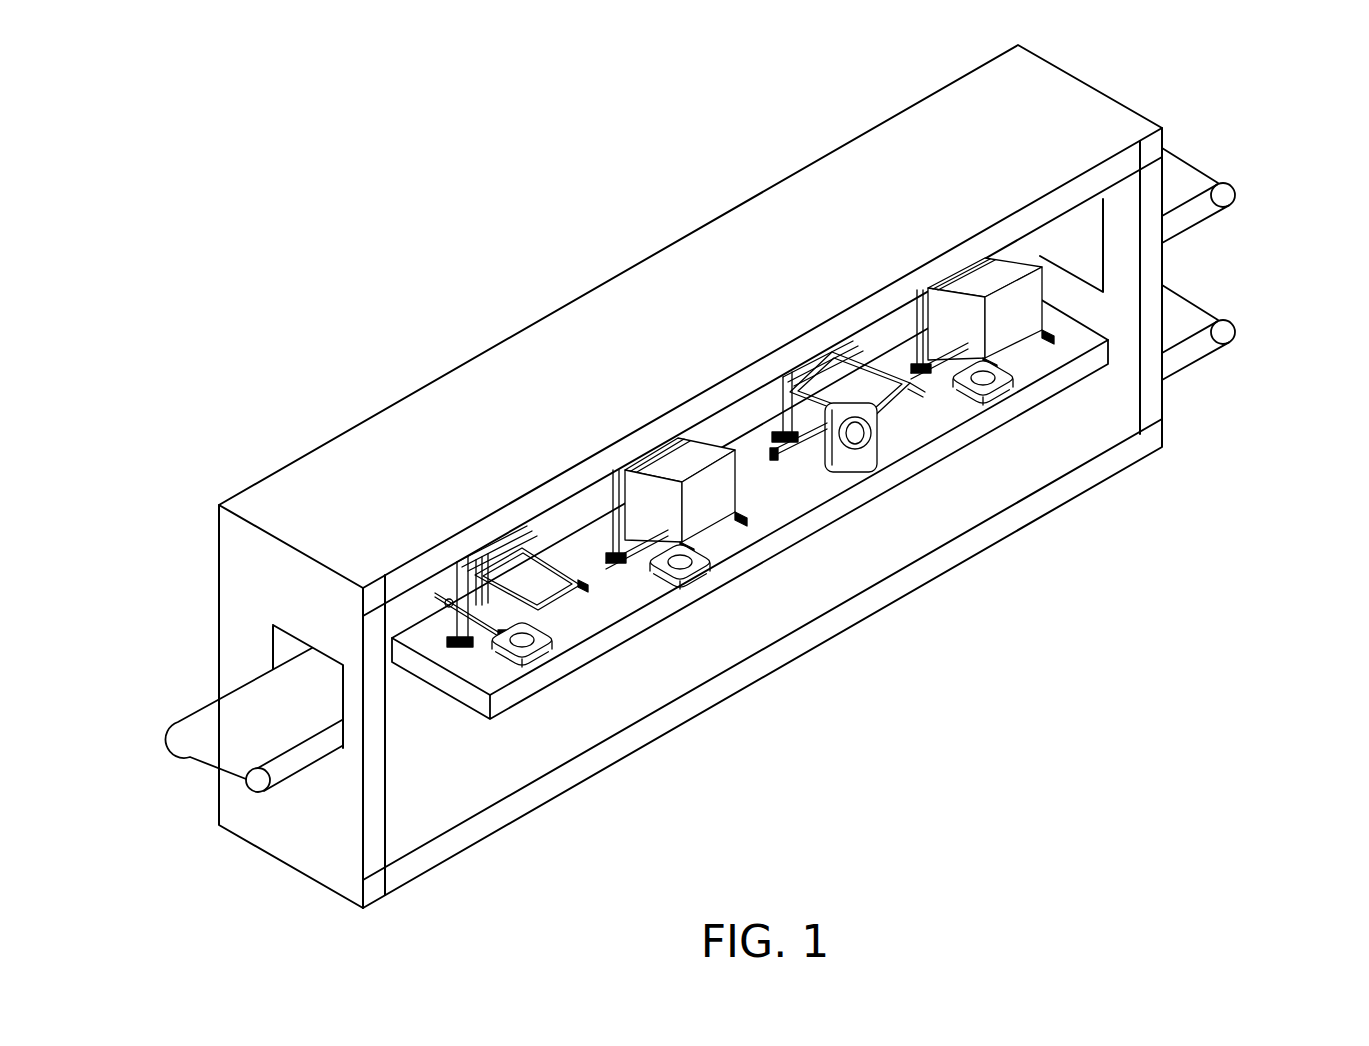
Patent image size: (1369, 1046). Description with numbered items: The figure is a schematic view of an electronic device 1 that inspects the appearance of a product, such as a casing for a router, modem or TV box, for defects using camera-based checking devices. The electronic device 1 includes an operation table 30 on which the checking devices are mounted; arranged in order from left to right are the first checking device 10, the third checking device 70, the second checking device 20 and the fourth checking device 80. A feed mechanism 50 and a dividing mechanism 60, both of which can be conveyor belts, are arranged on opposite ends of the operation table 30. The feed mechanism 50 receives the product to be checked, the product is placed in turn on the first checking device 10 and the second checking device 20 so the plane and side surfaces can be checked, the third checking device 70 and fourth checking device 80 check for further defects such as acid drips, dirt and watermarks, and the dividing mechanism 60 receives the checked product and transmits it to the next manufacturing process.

The electronic device 1 is at (428, 233).
The first checking device 10 is at (562, 645).
The second checking device 20 is at (882, 447).
The operation table 30 is at (493, 677).
The feed mechanism 50 is at (235, 712).
The dividing mechanism 60 is at (1210, 276).
The third checking device 70 is at (695, 560).
The fourth checking device 80 is at (1020, 375).